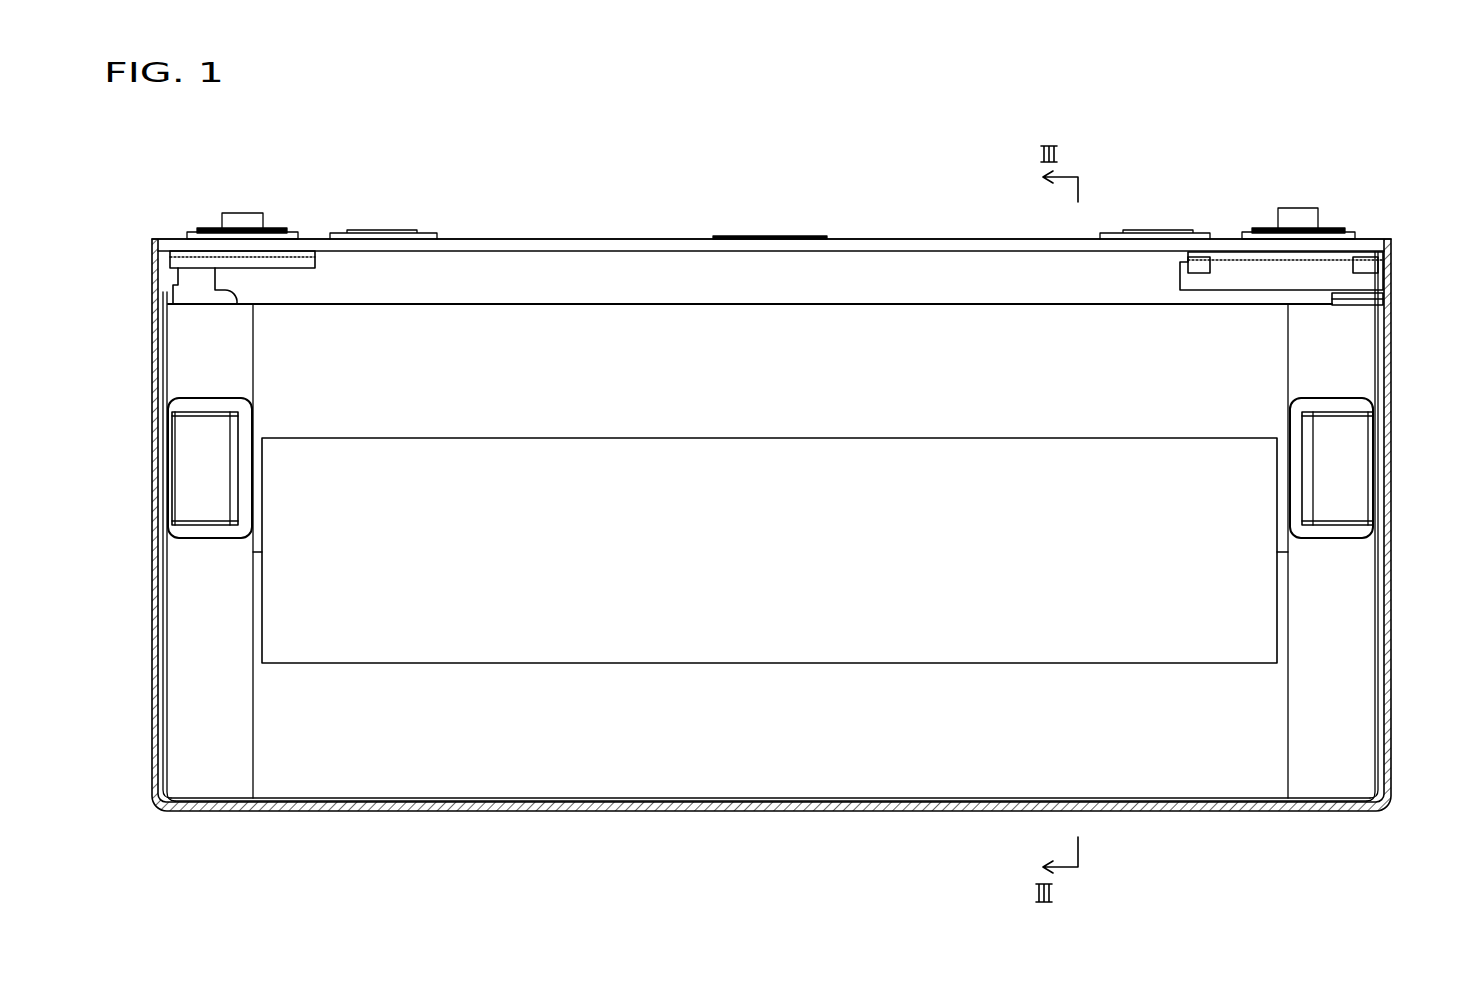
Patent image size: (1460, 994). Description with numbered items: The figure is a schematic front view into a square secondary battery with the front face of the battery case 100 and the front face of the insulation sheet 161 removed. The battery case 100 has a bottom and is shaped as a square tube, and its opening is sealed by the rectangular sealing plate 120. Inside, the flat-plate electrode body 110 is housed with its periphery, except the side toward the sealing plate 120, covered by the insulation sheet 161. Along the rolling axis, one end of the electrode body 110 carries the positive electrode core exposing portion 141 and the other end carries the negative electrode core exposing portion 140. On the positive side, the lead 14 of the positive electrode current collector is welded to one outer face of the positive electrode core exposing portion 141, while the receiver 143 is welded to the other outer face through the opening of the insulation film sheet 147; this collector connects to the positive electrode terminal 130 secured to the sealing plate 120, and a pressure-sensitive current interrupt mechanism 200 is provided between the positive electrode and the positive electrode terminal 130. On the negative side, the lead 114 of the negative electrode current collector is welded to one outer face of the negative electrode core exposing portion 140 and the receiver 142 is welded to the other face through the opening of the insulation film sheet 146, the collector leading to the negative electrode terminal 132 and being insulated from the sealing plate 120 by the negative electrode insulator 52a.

The battery case 100 is at (1391, 645).
The electrode body 110 is at (787, 775).
The sealing plate 120 is at (553, 245).
The positive electrode terminal 130 is at (1300, 220).
The negative electrode terminal 132 is at (240, 218).
The lead of the negative electrode current collector 114 is at (190, 280).
The negative electrode insulator 52a is at (307, 262).
The current interrupt mechanism 200 is at (1318, 273).
The lead of the positive electrode current collector 14 is at (1362, 302).
The negative electrode core exposing portion 140 is at (198, 775).
The positive electrode core exposing portion 141 is at (1340, 775).
The receiver of the negative electrode current collector 142 is at (187, 488).
The receiver of the positive electrode current collector 143 is at (1345, 488).
The insulation film sheet 146 is at (247, 440).
The insulation film sheet 147 is at (1300, 438).
The insulation sheet 161 is at (158, 713).